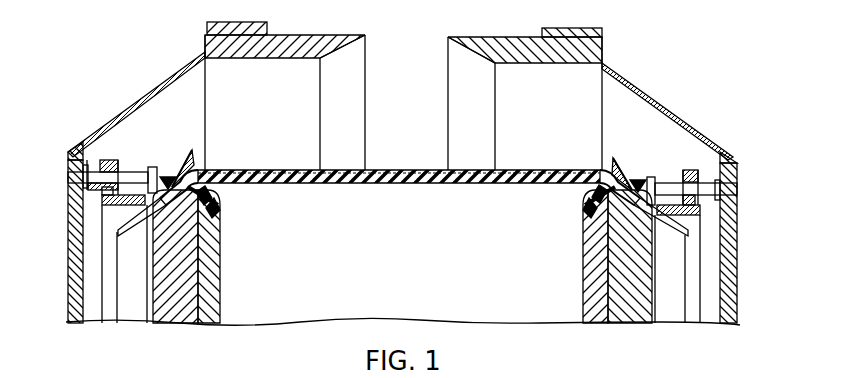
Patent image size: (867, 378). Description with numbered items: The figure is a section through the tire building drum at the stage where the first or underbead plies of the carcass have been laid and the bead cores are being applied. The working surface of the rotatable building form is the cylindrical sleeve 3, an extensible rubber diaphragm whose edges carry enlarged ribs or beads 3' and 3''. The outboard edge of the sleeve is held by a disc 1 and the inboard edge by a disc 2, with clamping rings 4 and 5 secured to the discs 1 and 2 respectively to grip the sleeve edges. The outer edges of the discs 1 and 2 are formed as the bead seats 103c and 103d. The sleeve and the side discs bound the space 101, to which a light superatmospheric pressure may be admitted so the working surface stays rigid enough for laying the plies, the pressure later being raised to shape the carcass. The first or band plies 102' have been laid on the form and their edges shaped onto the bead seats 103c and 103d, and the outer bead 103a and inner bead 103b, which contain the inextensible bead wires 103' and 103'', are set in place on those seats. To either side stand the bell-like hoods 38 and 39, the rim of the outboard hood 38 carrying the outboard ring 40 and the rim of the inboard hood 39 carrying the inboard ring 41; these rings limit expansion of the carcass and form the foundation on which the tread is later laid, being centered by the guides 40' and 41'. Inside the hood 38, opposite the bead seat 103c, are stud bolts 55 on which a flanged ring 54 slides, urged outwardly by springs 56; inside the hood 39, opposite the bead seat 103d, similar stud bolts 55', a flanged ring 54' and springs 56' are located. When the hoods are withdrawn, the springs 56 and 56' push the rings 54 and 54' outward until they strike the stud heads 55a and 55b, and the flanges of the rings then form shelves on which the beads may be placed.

The disc 1 is at (172, 298).
The disc 2 is at (637, 320).
The cylindrical sleeve 3 is at (400, 200).
The rib or bead of sleeve 3' is at (230, 220).
The rib or bead of sleeve 3'' is at (562, 223).
The clamping ring 4 is at (219, 260).
The clamping ring 5 is at (584, 262).
The bell-like hood 38 is at (68, 268).
The hood 39 is at (723, 325).
The outboard ring 40 is at (285, 85).
The guide 40' is at (254, 17).
The inboard ring 41 is at (525, 85).
The guide 41' is at (595, 25).
The flanged ring 54 is at (134, 267).
The flanged ring 54' is at (667, 260).
The stud bolts 55 is at (136, 114).
The stud bolts 55' is at (667, 125).
The stud head 55a is at (145, 187).
The stud head 55b is at (652, 178).
The springs 56 is at (90, 153).
The springs 56' is at (719, 163).
The space 101 is at (399, 278).
The first or band plies 102' is at (399, 150).
The bead wire 103' is at (165, 156).
The bead wire 103'' is at (626, 166).
The outer bead 103a is at (186, 152).
The inner bead 103b is at (615, 165).
The bead seat 103c is at (218, 203).
The bead seat 103d is at (588, 207).